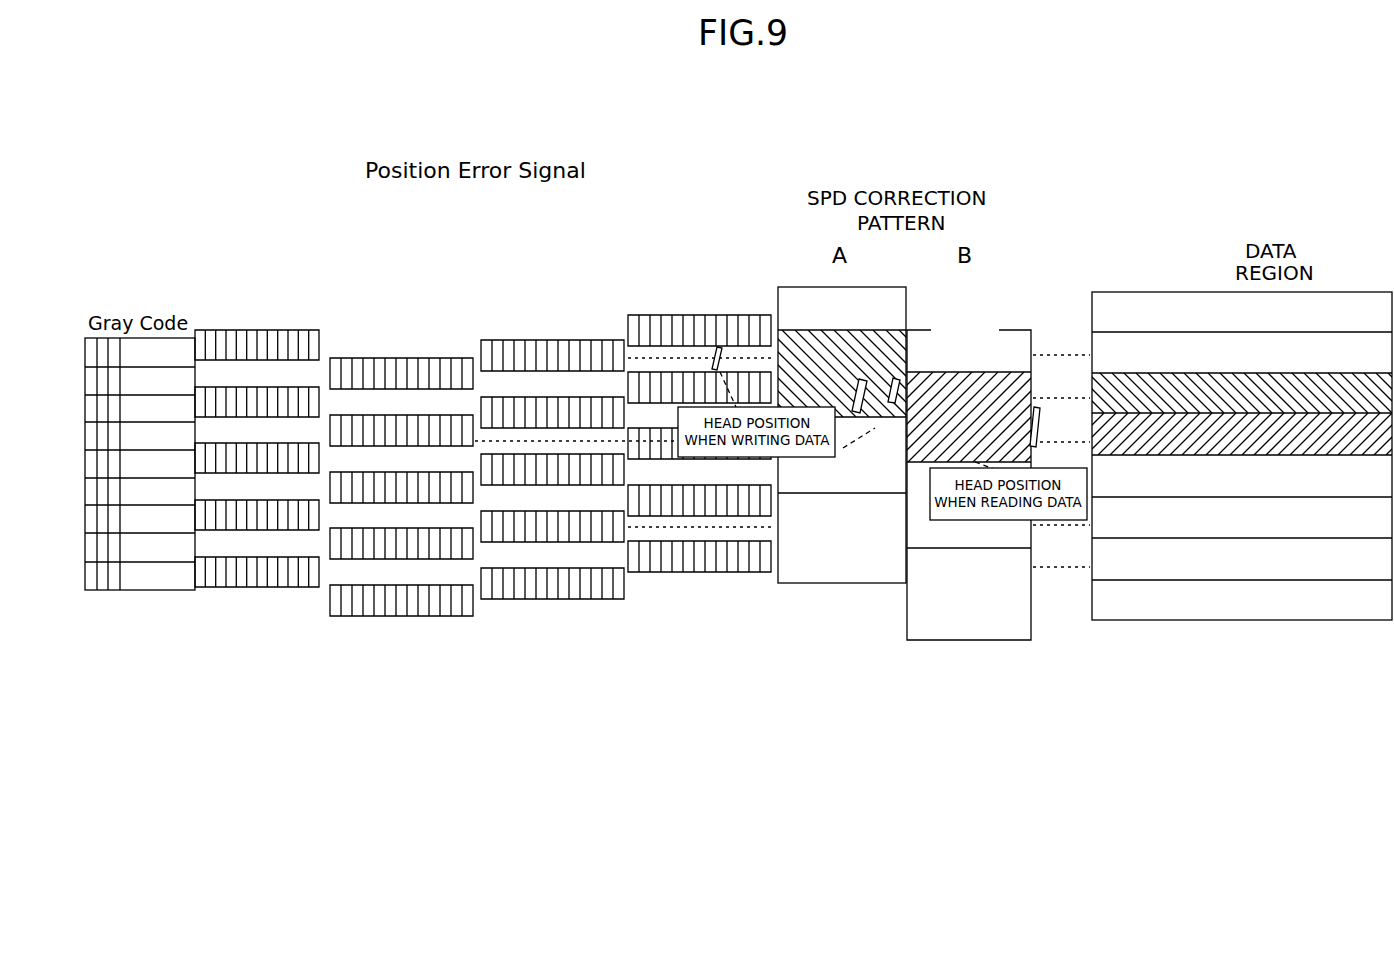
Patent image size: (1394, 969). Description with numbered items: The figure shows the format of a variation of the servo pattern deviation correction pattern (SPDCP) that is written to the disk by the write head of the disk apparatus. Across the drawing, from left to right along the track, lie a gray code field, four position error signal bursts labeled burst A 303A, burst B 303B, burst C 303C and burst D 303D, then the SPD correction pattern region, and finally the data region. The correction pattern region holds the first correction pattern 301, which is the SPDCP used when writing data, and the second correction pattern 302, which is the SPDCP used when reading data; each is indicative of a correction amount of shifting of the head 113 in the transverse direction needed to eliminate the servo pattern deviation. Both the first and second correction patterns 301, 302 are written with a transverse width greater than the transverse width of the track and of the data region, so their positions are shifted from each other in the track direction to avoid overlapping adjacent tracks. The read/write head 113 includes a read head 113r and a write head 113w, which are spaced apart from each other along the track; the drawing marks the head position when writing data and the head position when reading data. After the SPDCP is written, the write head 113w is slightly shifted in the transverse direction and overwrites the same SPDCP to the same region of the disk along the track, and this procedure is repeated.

The read/write head 113 is at (770, 318).
The read head 113r is at (715, 350).
The write head 113w is at (1027, 373).
The first correction pattern 301 is at (847, 584).
The second correction pattern 302 is at (970, 641).
The burst A 303A is at (257, 424).
The burst B 303B is at (401, 439).
The burst C 303C is at (552, 430).
The burst D 303D is at (699, 402).